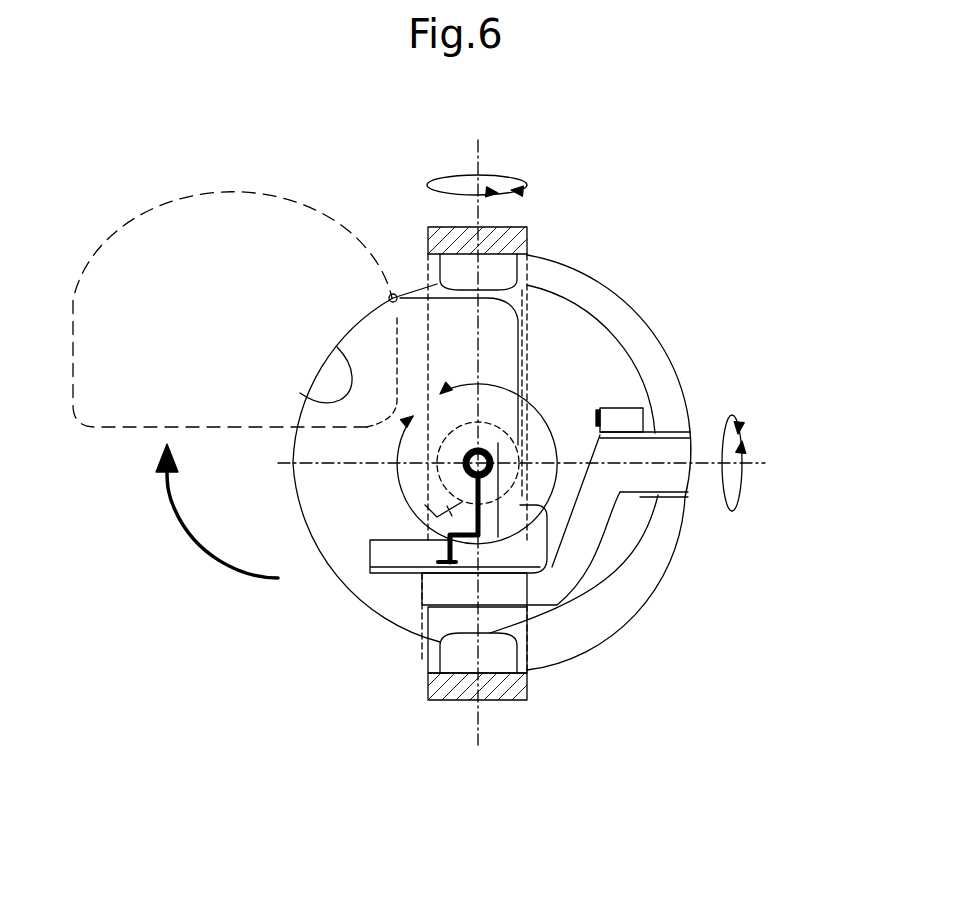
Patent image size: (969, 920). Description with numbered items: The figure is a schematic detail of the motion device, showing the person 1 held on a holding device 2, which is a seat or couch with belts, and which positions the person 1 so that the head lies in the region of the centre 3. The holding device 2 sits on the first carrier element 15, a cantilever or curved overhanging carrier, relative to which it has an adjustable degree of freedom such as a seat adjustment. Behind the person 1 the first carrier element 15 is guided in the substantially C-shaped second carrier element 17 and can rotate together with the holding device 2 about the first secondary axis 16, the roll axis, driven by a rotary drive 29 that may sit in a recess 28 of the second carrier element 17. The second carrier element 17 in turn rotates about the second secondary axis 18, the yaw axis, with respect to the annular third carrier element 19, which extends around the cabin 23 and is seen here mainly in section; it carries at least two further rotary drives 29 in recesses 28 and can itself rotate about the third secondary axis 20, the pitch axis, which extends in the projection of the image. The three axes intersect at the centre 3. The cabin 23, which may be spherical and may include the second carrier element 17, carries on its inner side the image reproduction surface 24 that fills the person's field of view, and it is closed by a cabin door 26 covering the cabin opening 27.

The person 1 is at (461, 500).
The holding device 2 is at (479, 480).
The centre 3 is at (465, 463).
The first carrier element 15 is at (563, 577).
The first secondary axis 16 is at (763, 462).
The second carrier element 17 is at (650, 368).
The second secondary axis 18 is at (480, 715).
The third carrier element 19 is at (507, 240).
The third secondary axis 20 is at (463, 466).
The cabin 23 is at (573, 360).
The image reproduction surface 24 is at (300, 393).
The cabin door 26 is at (251, 200).
The cabin opening 27 is at (530, 303).
The recess 28 is at (457, 272).
The rotary drive 29 is at (468, 268).